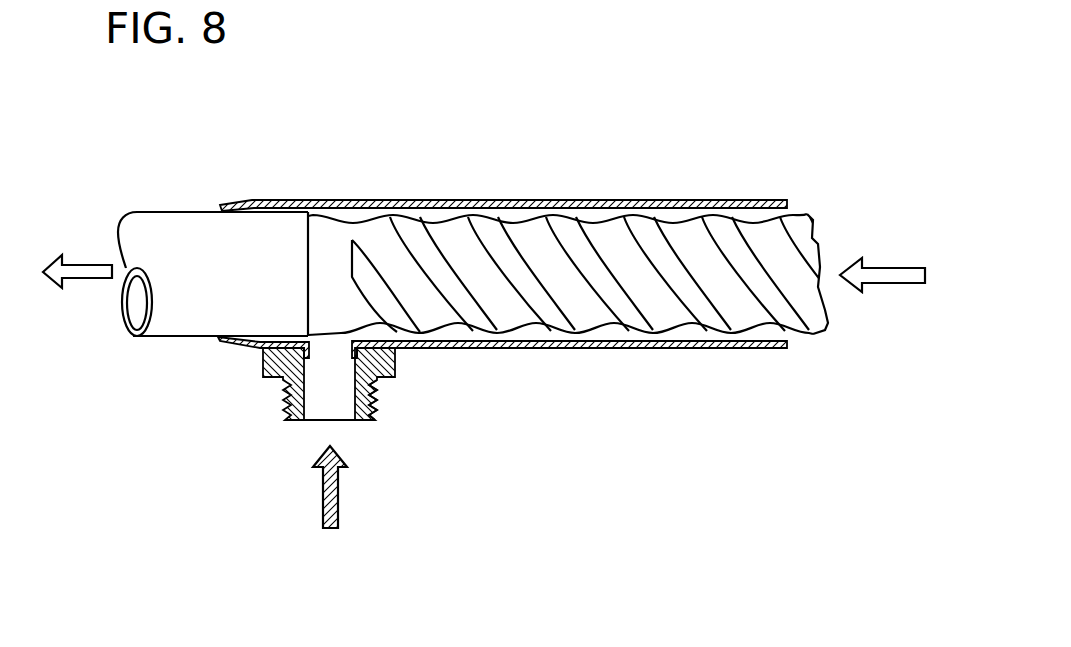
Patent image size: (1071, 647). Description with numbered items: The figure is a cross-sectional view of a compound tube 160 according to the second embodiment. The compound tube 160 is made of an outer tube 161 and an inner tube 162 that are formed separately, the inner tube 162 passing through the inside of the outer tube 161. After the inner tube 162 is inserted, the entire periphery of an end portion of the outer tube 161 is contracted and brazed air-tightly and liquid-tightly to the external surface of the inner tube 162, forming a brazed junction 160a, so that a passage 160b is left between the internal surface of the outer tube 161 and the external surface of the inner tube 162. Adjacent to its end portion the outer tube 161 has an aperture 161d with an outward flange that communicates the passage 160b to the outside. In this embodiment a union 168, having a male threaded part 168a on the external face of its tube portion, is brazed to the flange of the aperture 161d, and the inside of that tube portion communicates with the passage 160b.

The compound tube 160 is at (578, 196).
The brazed junction 160a is at (225, 220).
The passage 160b is at (636, 213).
The outer tube 161 is at (267, 199).
The aperture 161d is at (330, 352).
The inner tube 162 is at (276, 248).
The union 168 is at (368, 388).
The male threaded part 168a is at (380, 406).